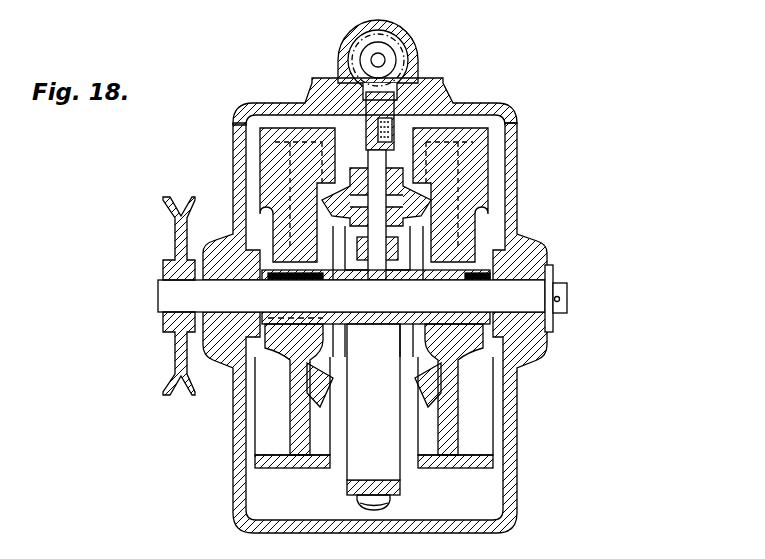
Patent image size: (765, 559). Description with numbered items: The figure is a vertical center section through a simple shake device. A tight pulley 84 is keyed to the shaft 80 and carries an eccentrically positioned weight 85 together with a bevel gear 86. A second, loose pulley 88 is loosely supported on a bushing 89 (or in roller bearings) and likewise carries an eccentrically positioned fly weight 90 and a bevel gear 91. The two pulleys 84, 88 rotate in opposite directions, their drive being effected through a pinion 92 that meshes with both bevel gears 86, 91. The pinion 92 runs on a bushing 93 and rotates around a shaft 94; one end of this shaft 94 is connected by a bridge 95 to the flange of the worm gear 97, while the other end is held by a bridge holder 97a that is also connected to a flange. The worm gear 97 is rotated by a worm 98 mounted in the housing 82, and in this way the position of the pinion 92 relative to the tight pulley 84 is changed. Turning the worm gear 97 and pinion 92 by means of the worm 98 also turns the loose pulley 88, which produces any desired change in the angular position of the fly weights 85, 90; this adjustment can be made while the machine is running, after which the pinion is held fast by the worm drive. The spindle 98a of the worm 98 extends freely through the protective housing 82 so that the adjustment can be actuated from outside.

The shaft 80 is at (185, 300).
The housing 82 is at (515, 163).
The pulley 84 is at (260, 467).
The eccentrically positioned weight 85 is at (275, 155).
The bevel gear 86 is at (283, 403).
The pulley 88 is at (487, 463).
The bushing 89 is at (553, 282).
The fly weight 90 is at (475, 197).
The bevel gear 91 is at (433, 378).
The pinion 92 is at (327, 197).
The bushing 93 is at (497, 128).
The shaft 94 is at (378, 268).
The bridge 95 is at (390, 128).
The worm gear 97 is at (368, 102).
The bridge holder 97a is at (396, 248).
The worm 98 is at (402, 57).
The spindle 98a is at (378, 62).